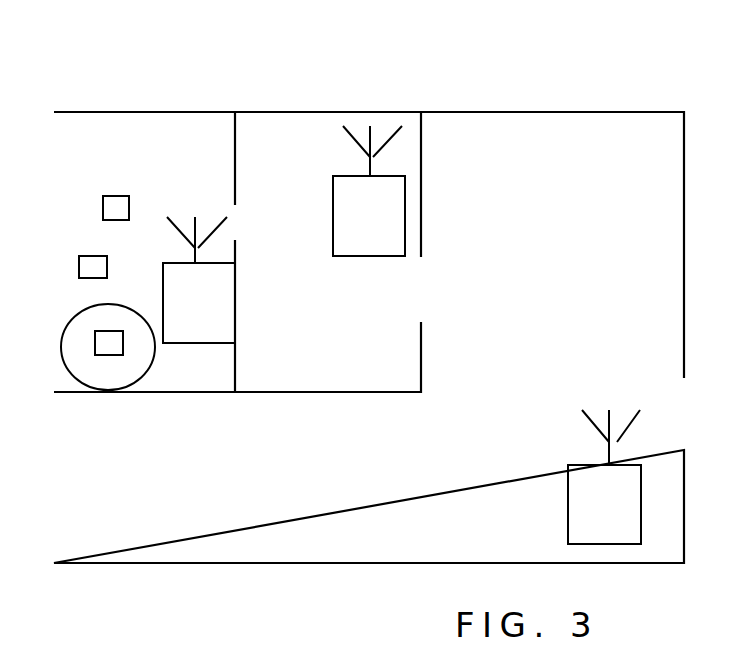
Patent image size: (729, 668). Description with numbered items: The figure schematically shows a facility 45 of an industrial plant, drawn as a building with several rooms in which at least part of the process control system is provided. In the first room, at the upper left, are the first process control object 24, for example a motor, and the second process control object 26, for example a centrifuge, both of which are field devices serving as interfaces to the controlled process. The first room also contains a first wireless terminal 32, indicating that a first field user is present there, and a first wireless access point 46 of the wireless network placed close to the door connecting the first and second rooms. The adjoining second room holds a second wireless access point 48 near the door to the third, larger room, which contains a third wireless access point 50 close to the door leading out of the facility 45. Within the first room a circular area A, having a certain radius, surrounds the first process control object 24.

The facility 45 is at (302, 113).
The area A is at (88, 366).
The first process control object 24 is at (113, 355).
The second process control object 26 is at (123, 206).
The first wireless terminal 32 is at (93, 255).
The first wireless access point 46 is at (199, 280).
The second wireless access point 48 is at (369, 191).
The third wireless access point 50 is at (604, 477).